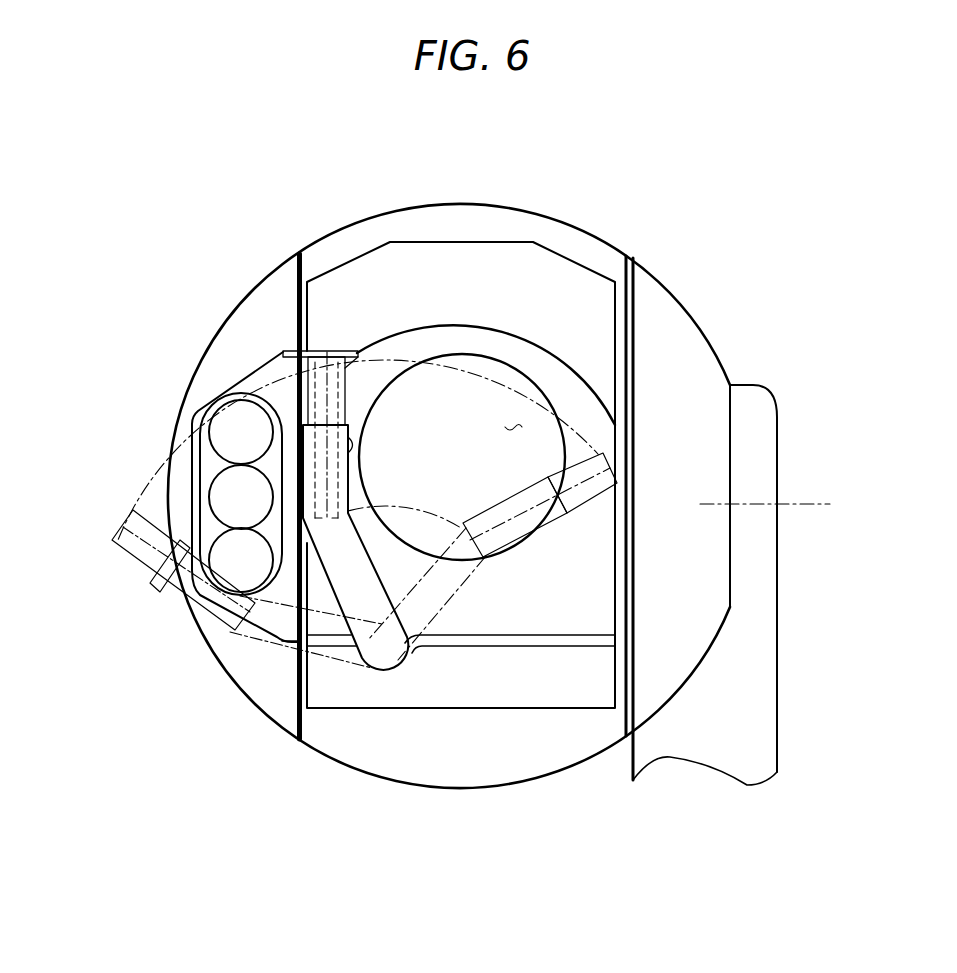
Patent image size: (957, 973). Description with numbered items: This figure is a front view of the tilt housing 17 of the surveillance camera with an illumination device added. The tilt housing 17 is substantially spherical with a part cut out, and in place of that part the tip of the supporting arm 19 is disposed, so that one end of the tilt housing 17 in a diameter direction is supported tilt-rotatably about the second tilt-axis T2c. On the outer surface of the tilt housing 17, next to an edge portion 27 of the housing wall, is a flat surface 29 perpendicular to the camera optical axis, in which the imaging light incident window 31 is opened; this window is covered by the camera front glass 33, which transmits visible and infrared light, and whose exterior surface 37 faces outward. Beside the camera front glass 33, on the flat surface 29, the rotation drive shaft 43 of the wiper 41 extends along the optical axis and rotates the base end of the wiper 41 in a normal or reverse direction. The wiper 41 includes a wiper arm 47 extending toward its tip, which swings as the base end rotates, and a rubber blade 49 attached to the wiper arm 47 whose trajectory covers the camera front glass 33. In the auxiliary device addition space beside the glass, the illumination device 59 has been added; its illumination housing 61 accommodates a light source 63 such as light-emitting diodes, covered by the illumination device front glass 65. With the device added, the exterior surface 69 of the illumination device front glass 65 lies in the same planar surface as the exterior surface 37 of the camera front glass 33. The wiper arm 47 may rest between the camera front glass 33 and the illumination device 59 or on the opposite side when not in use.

The tilt housing 17 is at (456, 203).
The supporting arm 19 is at (778, 746).
The side wall 27 is at (629, 281).
The flat surface 29 is at (520, 332).
The imaging light incident window 31 is at (472, 356).
The camera front glass 33 is at (385, 370).
The exterior surface of camera front glass 37 is at (521, 425).
The wiper 41 is at (404, 607).
The rotation drive shaft 43 is at (384, 656).
The wiper arm 47 is at (483, 553).
The blade 49 is at (308, 400).
The illumination device 59 is at (188, 406).
The illumination housing 61 is at (250, 364).
The light source 63 is at (227, 402).
The illumination device front glass 65 is at (190, 468).
The exterior surface of illumination device front glass 69 is at (217, 530).
The second tilt-axis T2c is at (807, 505).